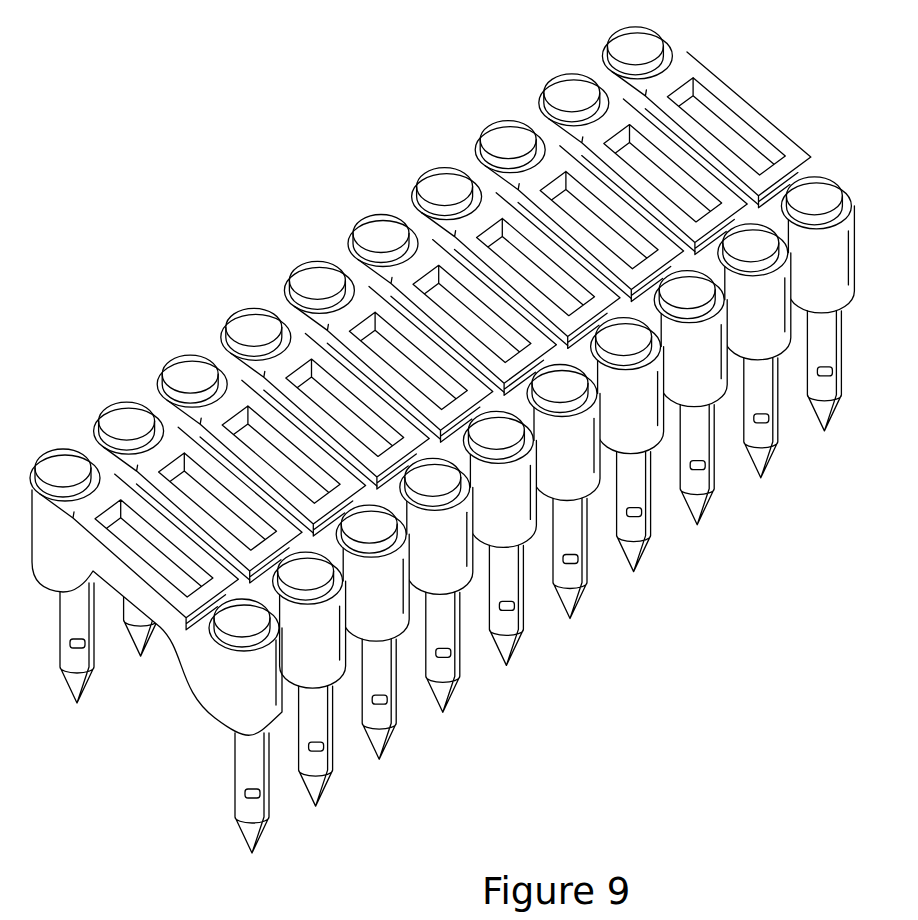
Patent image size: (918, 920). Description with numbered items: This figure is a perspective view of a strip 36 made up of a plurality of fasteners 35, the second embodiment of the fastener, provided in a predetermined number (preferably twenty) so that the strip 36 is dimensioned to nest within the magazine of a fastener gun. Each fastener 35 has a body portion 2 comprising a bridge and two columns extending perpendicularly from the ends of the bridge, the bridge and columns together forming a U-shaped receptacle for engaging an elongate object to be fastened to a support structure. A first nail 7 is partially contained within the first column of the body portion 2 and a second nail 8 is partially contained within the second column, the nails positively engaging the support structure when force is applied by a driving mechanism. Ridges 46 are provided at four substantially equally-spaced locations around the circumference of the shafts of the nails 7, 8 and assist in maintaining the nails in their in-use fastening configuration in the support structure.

The strip 36 is at (433, 442).
The first nail 7 is at (128, 653).
The body portion 2 is at (168, 668).
The ridges 46 is at (252, 796).
The fastener 35 is at (657, 463).
The second nail 8 is at (822, 440).